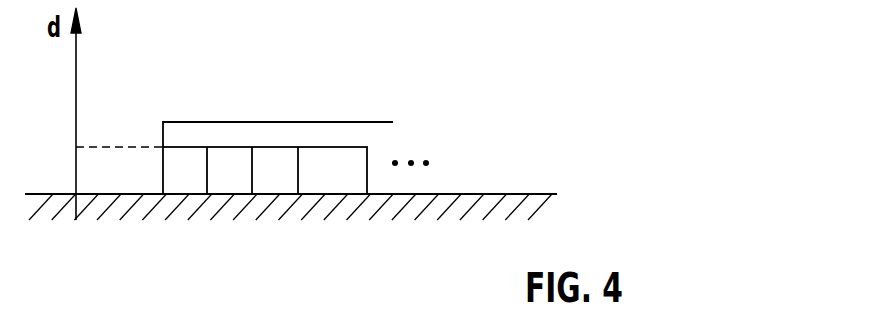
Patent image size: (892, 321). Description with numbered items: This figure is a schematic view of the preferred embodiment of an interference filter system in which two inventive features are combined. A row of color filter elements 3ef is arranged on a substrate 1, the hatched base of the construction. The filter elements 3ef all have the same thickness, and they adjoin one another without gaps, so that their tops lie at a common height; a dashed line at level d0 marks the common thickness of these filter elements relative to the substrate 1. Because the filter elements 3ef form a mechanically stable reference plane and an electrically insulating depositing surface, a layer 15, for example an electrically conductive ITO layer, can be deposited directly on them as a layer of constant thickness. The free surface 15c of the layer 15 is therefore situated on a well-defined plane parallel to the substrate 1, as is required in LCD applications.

The substrate 1 is at (497, 251).
The filter elements 3ef is at (331, 147).
The layer 15 is at (193, 132).
The free surface 15c is at (255, 122).
The reference thickness of the color filter cells d0 is at (97, 147).